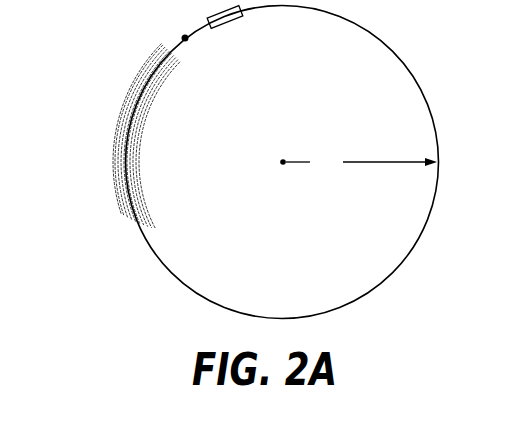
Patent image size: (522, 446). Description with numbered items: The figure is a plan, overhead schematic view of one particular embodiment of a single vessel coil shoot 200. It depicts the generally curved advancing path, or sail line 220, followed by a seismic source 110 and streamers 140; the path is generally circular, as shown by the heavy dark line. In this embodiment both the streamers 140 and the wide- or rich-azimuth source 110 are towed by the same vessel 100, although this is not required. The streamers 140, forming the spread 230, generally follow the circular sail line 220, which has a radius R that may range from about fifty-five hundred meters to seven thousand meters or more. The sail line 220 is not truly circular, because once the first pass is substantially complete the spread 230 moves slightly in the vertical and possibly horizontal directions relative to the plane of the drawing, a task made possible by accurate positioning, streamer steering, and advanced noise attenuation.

The single vessel coil shoot 200 is at (412, 35).
The spread 230 is at (100, 62).
The streamers 140 is at (150, 133).
The seismic source 110 is at (184, 36).
The vessel 100 is at (228, 23).
The sail lines 220 is at (280, 317).
The radius R is at (358, 163).